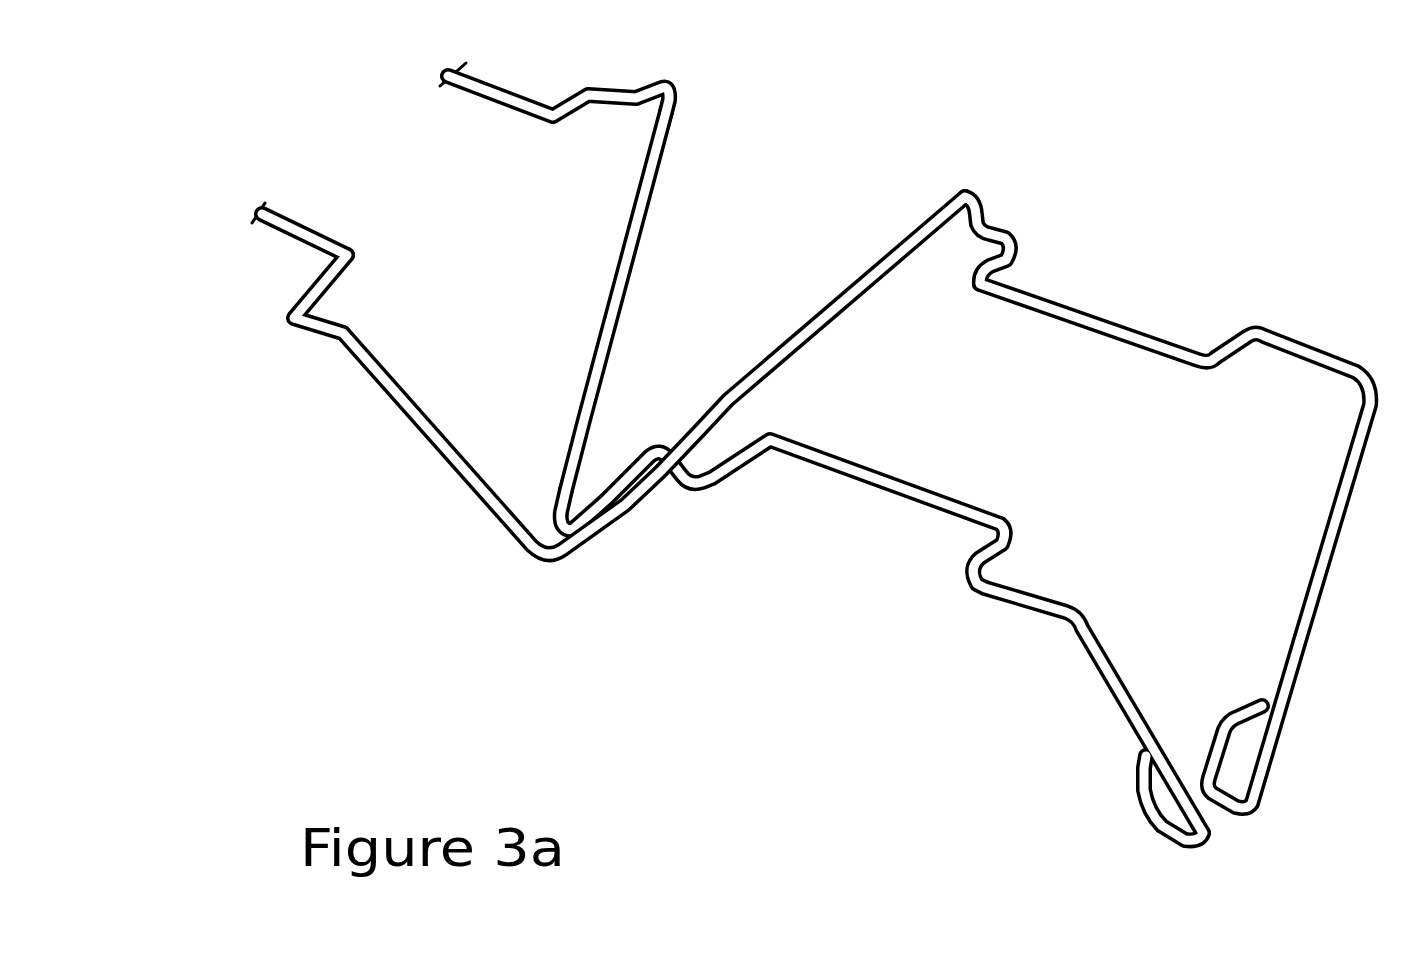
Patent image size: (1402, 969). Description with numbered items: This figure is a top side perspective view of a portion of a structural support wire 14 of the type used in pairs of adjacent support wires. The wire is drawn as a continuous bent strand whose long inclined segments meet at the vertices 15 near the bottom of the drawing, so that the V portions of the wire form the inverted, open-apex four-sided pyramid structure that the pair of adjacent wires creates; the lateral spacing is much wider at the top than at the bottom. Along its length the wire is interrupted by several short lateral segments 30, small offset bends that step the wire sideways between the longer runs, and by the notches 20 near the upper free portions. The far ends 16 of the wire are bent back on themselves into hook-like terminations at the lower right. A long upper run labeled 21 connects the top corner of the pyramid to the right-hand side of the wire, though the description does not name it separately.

The structural support wire 14 is at (310, 482).
The vertices 15 is at (555, 558).
The ends 16 is at (1218, 843).
The notches 20 is at (675, 75).
The cross member 21 is at (1133, 323).
The short lateral segments 30 is at (603, 113).